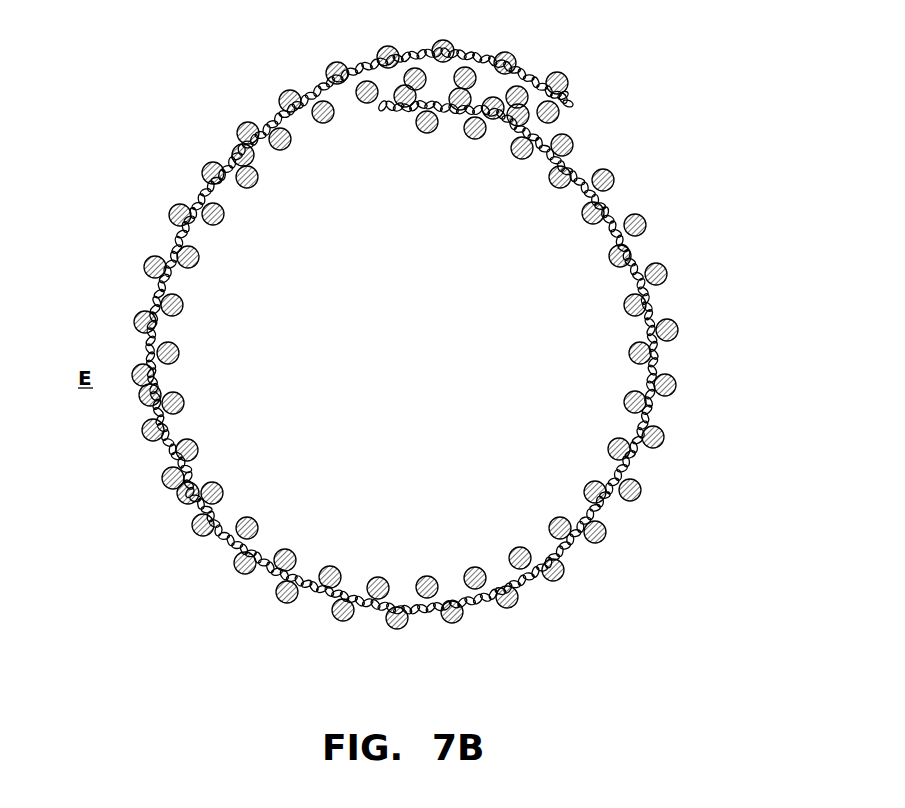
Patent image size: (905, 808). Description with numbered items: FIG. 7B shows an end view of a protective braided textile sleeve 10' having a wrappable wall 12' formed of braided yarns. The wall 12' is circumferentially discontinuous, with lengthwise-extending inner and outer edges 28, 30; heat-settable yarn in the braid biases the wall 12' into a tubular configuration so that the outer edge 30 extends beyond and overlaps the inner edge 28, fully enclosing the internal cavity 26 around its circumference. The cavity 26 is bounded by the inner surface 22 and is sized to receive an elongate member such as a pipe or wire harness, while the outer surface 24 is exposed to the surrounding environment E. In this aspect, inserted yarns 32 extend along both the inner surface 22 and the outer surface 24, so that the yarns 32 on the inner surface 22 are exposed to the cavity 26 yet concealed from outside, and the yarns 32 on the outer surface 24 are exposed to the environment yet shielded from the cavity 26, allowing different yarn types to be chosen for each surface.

The protective braided textile sleeve 10' is at (415, 314).
The wrappable wall 12' is at (415, 314).
The inner surface 22 is at (423, 321).
The outer surface 24 is at (451, 314).
The internal cavity 26 is at (421, 368).
The inner edge 28 is at (383, 105).
The outer edge 30 is at (567, 101).
The inserted yarns 32 is at (385, 50).